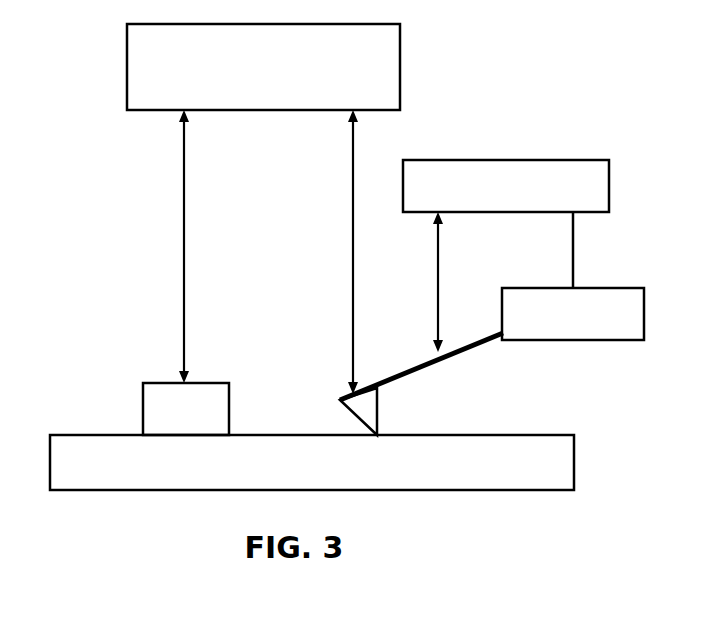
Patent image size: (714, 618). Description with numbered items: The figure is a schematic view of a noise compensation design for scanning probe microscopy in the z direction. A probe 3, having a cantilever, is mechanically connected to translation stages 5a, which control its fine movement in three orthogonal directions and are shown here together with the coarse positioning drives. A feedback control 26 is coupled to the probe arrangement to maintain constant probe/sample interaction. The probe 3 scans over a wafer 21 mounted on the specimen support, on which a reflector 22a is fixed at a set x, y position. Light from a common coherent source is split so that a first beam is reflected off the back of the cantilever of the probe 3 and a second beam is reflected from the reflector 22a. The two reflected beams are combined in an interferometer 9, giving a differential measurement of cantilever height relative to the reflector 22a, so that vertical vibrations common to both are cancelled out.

The interferometer 9 is at (273, 89).
The feedback control 26 is at (492, 197).
The translation stages 5a is at (617, 327).
The reflector 22a is at (210, 421).
The wafer 21 is at (327, 473).
The probe 3 is at (430, 383).